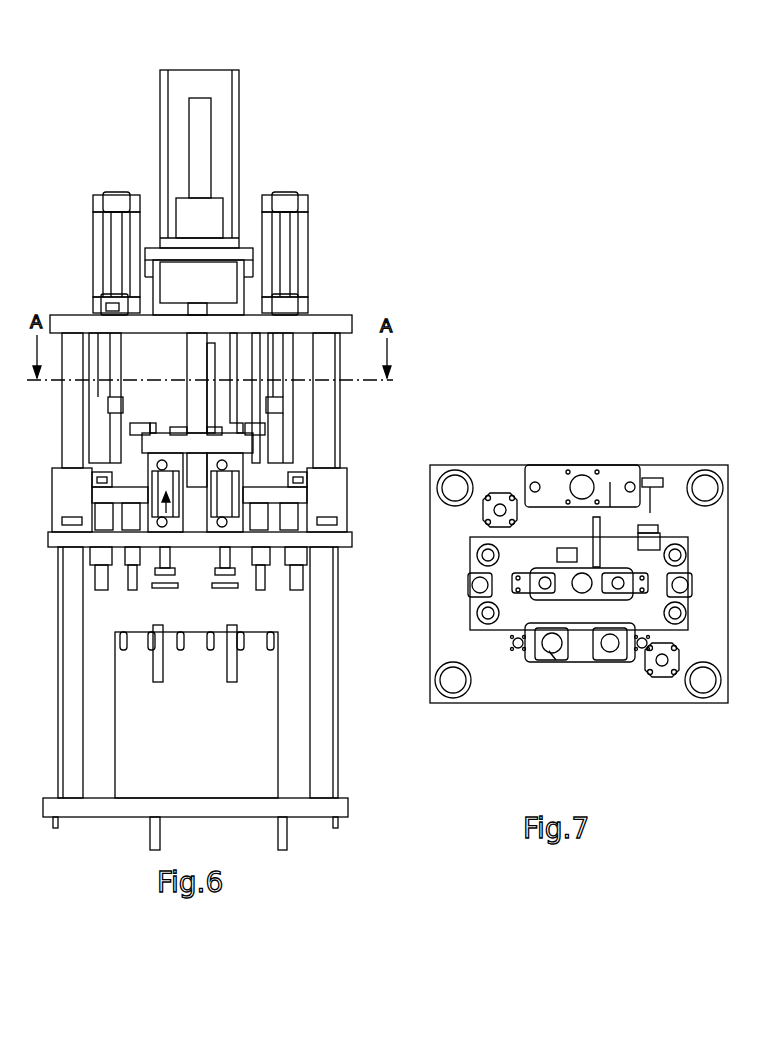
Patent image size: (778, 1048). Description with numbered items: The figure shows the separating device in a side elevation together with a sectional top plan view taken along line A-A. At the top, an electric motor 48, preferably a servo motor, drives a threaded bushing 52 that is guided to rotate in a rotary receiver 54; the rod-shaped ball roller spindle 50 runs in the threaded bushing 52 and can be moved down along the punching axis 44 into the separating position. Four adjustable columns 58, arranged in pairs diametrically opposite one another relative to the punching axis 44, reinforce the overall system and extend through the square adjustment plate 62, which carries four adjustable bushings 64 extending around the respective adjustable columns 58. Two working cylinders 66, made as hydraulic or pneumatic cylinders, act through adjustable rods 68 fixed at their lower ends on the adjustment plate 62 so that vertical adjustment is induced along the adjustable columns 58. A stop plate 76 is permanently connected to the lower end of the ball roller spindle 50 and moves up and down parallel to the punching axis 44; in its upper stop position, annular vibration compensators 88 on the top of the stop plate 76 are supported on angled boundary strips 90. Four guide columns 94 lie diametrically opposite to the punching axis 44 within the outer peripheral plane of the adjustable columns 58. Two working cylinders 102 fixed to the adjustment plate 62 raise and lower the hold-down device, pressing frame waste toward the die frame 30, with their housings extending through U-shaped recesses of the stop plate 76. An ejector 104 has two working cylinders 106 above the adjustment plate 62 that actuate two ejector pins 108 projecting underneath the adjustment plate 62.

In FIG. 6, the die frame 30 is at (184, 764).
In FIG. 7, the punching axis 44 is at (582, 583).
In FIG. 6, the electric motor 48 is at (220, 130).
In FIG. 6, the ball roller spindle 50 is at (198, 110).
In FIG. 6, the threaded bushing 52 is at (203, 218).
In FIG. 6, the rotary receiver 54 is at (213, 291).
In FIG. 6, the adjustable columns 58 is at (327, 417).
In FIG. 7, the adjustable columns 58 is at (455, 487).
In FIG. 6, the adjustment plate 62 is at (342, 538).
In FIG. 7, the adjustment plate 62 is at (677, 690).
In FIG. 6, the adjustable bushings 64 is at (332, 483).
In FIG. 6, the working cylinders 66 is at (102, 258).
In FIG. 6, the adjustable rods 68 is at (283, 360).
In FIG. 7, the adjustable rods 68 is at (500, 507).
In FIG. 6, the stop plate 76 is at (243, 445).
In FIG. 7, the stop plate 76 is at (565, 573).
In FIG. 6, the annular vibration compensators 88 is at (155, 433).
In FIG. 7, the annular vibration compensators 88 is at (605, 588).
In FIG. 6, the angled boundary strips 90 is at (262, 460).
In FIG. 7, the angled boundary strips 90 is at (528, 583).
In FIG. 7, the guide columns 94 is at (480, 553).
In FIG. 7, the working cylinders 102 is at (470, 585).
In FIG. 6, the ejector 104 is at (170, 516).
In FIG. 7, the ejector 104 is at (552, 657).
In FIG. 6, the working cylinders 106 is at (230, 492).
In FIG. 7, the working cylinders 106 is at (610, 652).
In FIG. 6, the ejector pins 108 is at (132, 592).
In FIG. 7, the ejector pins 108 is at (518, 653).